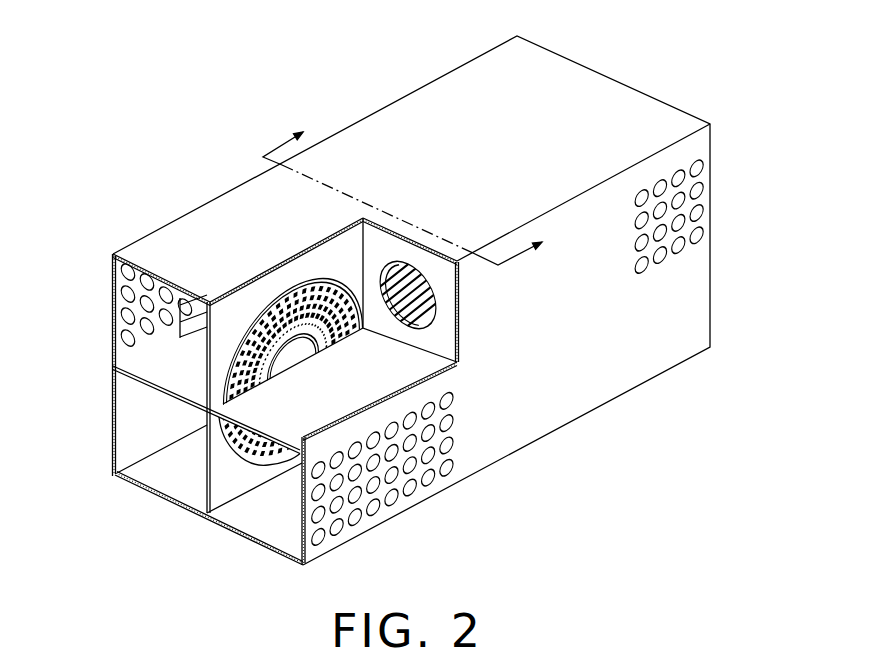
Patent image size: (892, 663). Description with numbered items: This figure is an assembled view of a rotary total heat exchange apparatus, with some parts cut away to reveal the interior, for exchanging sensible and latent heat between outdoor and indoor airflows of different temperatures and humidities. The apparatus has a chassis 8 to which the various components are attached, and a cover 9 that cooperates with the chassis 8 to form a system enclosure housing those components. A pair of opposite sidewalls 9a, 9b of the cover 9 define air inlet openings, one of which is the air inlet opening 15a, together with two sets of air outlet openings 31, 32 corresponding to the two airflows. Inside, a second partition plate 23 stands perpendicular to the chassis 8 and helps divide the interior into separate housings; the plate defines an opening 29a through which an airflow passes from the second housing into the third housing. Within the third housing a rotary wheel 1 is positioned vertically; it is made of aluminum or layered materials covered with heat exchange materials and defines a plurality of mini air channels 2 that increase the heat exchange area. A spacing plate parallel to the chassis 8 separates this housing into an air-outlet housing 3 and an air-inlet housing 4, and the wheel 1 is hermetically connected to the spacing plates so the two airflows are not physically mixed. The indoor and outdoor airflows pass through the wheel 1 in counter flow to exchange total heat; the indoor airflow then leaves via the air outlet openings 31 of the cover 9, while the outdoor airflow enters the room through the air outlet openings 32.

The rotary wheel 1 is at (240, 392).
The mini air channels 2 is at (237, 353).
The air-outlet housing 3 is at (150, 370).
The air-inlet housing 4 is at (277, 503).
The chassis 8 is at (152, 476).
The cover 9 is at (445, 140).
The sidewall 9a is at (303, 512).
The sidewall 9b is at (113, 413).
The air inlet opening 15a is at (700, 233).
The second partition plate 23 is at (435, 278).
The opening 29a is at (423, 306).
The air outlet openings 31 is at (113, 272).
The air outlet openings 32 is at (413, 487).